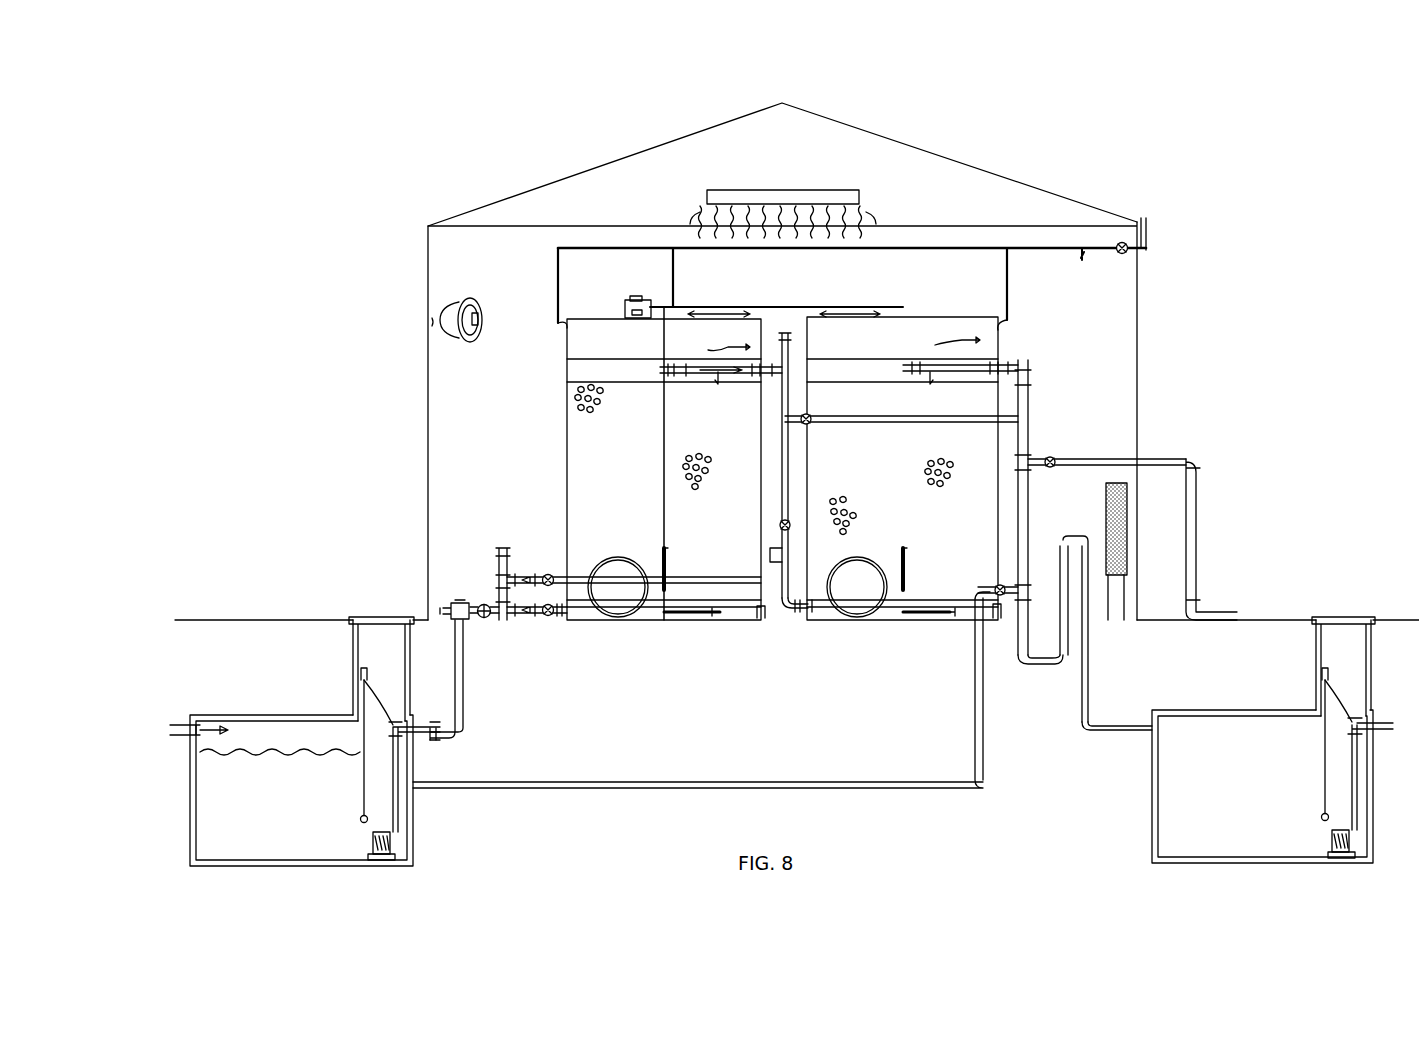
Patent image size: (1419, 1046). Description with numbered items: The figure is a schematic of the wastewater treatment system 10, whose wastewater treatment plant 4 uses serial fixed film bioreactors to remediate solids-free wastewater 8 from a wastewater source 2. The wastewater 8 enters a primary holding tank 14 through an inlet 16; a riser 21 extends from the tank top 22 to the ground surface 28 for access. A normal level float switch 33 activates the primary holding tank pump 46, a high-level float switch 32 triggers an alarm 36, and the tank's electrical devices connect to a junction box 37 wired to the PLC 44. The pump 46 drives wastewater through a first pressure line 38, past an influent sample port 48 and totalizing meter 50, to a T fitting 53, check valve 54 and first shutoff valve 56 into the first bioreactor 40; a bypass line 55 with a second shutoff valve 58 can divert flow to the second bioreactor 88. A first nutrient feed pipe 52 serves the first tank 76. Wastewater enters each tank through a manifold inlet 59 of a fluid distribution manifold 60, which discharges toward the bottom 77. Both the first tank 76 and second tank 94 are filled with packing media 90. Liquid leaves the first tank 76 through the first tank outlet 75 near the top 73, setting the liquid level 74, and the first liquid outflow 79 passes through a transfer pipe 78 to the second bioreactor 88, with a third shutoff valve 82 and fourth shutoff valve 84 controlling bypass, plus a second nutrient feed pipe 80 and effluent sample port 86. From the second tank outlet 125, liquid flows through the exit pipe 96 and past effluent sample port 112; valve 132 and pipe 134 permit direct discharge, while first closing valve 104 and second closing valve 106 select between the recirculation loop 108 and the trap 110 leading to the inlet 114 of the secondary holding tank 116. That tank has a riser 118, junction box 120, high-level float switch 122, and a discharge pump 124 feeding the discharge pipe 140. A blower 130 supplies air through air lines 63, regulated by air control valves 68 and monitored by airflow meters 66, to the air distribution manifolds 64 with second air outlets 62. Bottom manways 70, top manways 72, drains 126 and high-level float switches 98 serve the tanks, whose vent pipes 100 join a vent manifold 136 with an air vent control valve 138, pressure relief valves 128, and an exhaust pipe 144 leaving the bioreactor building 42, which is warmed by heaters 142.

The wastewater source 2 is at (176, 722).
The wastewater treatment plant 4 is at (452, 176).
The solids-free wastewater 8 is at (206, 722).
The wastewater treatment system 10 is at (1074, 139).
The primary holding tank 14 is at (236, 866).
The inlet 16 is at (208, 740).
The riser 21 is at (352, 644).
The tank top 22 is at (260, 714).
The ground surface 28 is at (240, 618).
The high-level float switch 32 is at (360, 815).
The normal level float switch 33 is at (370, 838).
The alarm 36 is at (468, 350).
The junction box 37 is at (368, 668).
The first pressure line 38 is at (470, 696).
The first bioreactor 40 is at (566, 424).
The bioreactor building 42 is at (1063, 204).
The main Program Logic Controller (PLC) 44 is at (1128, 512).
The primary holding tank pump 46 is at (398, 858).
The influent sample port 48 is at (445, 606).
The totalizing meter 50 is at (476, 604).
The first nutrient feed pipe 52 is at (500, 546).
The T fitting 53 is at (504, 620).
The check valve 54 is at (528, 618).
The bypass line 55 is at (664, 565).
The first shutoff valve 56 is at (552, 618).
The second shutoff valve 58 is at (546, 574).
The manifold inlet 59 is at (584, 612).
The fluid distribution manifold 60 is at (650, 612).
The second air outlet 62 is at (708, 622).
The air line 63 is at (832, 300).
The air distribution manifold 64 is at (686, 618).
The airflow meter 66 is at (660, 490).
The air control valve 68 is at (660, 480).
The bottom manway 70 is at (618, 622).
The top manway 72 is at (740, 310).
The top 73 is at (580, 315).
The liquid level 74 is at (566, 359).
The first tank outlet 75 is at (668, 356).
The first tank 76 is at (566, 455).
The bottom 77 is at (600, 547).
The transfer pipe 78 is at (775, 382).
The first liquid outflow 79 is at (708, 382).
The second nutrient feed pipe 80 is at (782, 330).
The third shutoff valve 82 is at (812, 418).
The fourth shutoff valve 84 is at (780, 522).
The effluent sample port 86 is at (740, 560).
The second bioreactor 88 is at (1000, 482).
The packing media 90 is at (566, 396).
The second tank 94 is at (1016, 412).
The exit pipe 96 is at (1032, 392).
The high-level float switch 98 is at (841, 357).
The vent pipe 100 is at (555, 333).
The first closing valve 104 is at (995, 586).
The second closing valve 106 is at (1060, 606).
The recirculation loop 108 is at (590, 790).
The trap 110 is at (1042, 668).
The effluent sample port 112 is at (1005, 548).
The inlet 114 is at (1166, 738).
The secondary holding tank 116 is at (1206, 708).
The riser 118 is at (1314, 648).
The junction box 120 is at (1328, 668).
The high-level float switch 122 is at (1320, 813).
The discharge pump 124 is at (1342, 858).
The second tank outlet 125 is at (900, 362).
The drain 126 is at (770, 620).
The pressure relief valve 128 is at (1078, 262).
The blower 130 is at (630, 296).
The valve 132 is at (1054, 456).
The pipe 134 is at (1200, 545).
The vent manifold 136 is at (962, 246).
The air vent control valve 138 is at (1120, 256).
The discharge pipe 140 is at (1385, 716).
The heater 142 is at (784, 184).
The exhaust pipe 144 is at (1150, 240).